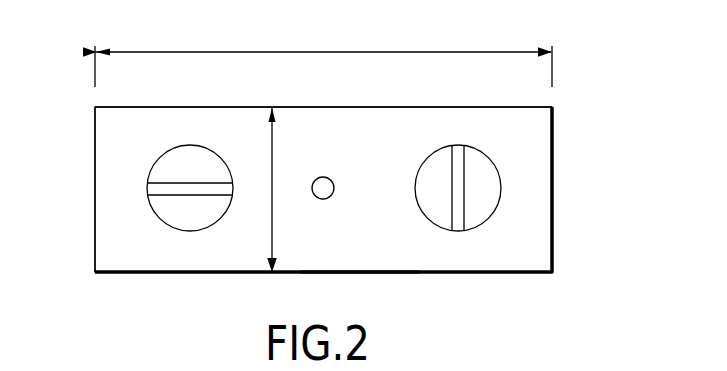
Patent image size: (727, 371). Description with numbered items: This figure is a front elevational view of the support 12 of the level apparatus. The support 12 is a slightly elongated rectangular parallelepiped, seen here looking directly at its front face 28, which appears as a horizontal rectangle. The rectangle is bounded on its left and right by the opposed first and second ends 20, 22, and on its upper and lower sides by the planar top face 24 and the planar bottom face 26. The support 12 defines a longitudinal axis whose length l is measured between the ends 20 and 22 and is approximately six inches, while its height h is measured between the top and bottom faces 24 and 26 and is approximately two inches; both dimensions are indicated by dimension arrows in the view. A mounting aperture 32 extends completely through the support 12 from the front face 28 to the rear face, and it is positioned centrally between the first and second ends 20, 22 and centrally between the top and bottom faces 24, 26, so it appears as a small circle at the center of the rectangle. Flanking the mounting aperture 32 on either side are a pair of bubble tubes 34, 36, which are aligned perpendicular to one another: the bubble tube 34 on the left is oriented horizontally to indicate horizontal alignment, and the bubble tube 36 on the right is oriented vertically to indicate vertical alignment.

The support 12 is at (586, 76).
The first end 20 is at (95, 187).
The second end 22 is at (554, 197).
The planar top face 24 is at (96, 106).
The planar bottom face 26 is at (510, 272).
The front face 28 is at (368, 262).
The mounting aperture 32 is at (322, 183).
The bubble tube 34 is at (198, 183).
The bubble tube 36 is at (449, 164).
The height h is at (270, 232).
The length l is at (323, 54).